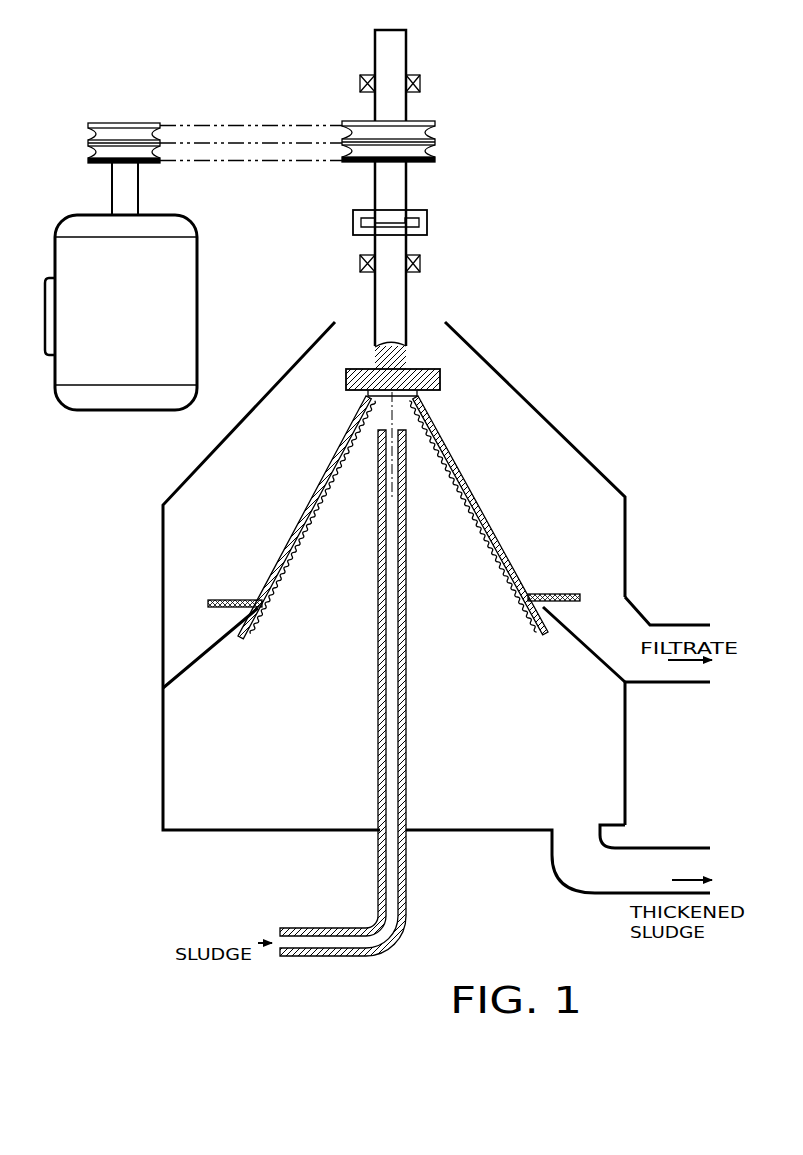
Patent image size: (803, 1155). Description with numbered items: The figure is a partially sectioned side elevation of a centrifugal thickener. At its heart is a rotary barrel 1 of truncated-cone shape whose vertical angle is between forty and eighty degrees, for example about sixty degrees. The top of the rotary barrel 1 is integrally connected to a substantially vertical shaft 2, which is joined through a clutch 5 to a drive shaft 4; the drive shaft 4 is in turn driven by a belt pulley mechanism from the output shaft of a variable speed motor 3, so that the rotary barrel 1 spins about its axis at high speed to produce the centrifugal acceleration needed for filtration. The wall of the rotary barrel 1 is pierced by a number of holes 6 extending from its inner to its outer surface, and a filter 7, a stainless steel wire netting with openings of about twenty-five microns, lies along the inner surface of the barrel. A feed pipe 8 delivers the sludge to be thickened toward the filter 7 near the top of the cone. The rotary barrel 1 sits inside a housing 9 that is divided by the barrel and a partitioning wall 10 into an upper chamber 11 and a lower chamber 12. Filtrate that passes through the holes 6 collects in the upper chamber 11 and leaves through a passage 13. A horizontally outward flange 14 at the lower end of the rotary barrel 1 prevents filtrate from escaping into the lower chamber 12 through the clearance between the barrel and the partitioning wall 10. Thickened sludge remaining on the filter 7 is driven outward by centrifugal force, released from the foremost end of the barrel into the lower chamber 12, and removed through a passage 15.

The rotary barrel 1 is at (322, 471).
The shaft 2 is at (406, 298).
The variable speed motor 3 is at (199, 305).
The drive shaft 4 is at (406, 189).
The clutch 5 is at (427, 225).
The holes 6 is at (461, 476).
The filter 7 is at (476, 520).
The feed pipe 8 is at (379, 740).
The housing 9 is at (559, 433).
The partitioning wall 10 is at (582, 646).
The upper chamber 11 is at (561, 522).
The lower chamber 12 is at (515, 712).
The passage 13 is at (672, 628).
The flange 14 is at (560, 594).
The passage 15 is at (665, 848).